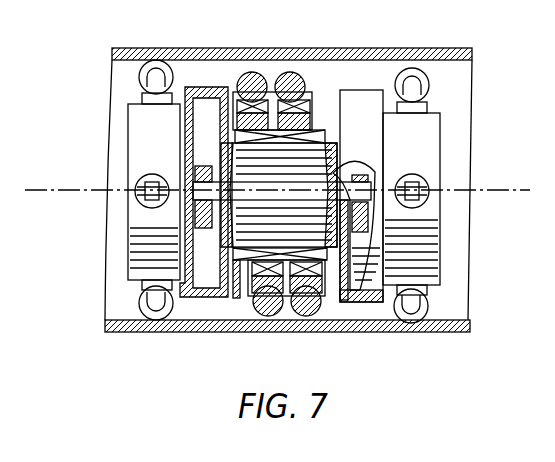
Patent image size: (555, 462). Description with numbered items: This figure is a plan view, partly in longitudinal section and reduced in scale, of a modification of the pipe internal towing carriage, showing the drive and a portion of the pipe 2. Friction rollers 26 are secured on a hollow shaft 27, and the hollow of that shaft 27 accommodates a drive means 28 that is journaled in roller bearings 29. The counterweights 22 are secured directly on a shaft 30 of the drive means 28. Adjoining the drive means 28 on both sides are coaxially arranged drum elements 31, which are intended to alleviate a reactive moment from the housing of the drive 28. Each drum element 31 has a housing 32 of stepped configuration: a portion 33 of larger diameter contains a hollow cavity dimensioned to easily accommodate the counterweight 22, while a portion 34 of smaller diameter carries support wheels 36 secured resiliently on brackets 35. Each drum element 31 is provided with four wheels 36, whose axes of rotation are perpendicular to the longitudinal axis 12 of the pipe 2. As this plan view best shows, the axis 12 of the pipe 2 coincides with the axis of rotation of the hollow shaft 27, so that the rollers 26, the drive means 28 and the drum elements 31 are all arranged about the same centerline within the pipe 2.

The pipe 2 is at (470, 61).
The longitudinal axis 12 is at (72, 191).
The counterweights 22 is at (192, 298).
The friction rollers 26 is at (283, 72).
The hollow shaft 27 is at (315, 103).
The drive means 28 is at (328, 160).
The roller bearings 29 is at (233, 300).
The shaft of the drive means 30 is at (195, 205).
The drum elements 31 is at (140, 128).
The housing 32 is at (337, 302).
The portion of larger diameter 33 is at (378, 303).
The portion of smaller diameter 34 is at (428, 258).
The brackets 35 is at (426, 107).
The support wheels 36 is at (428, 88).